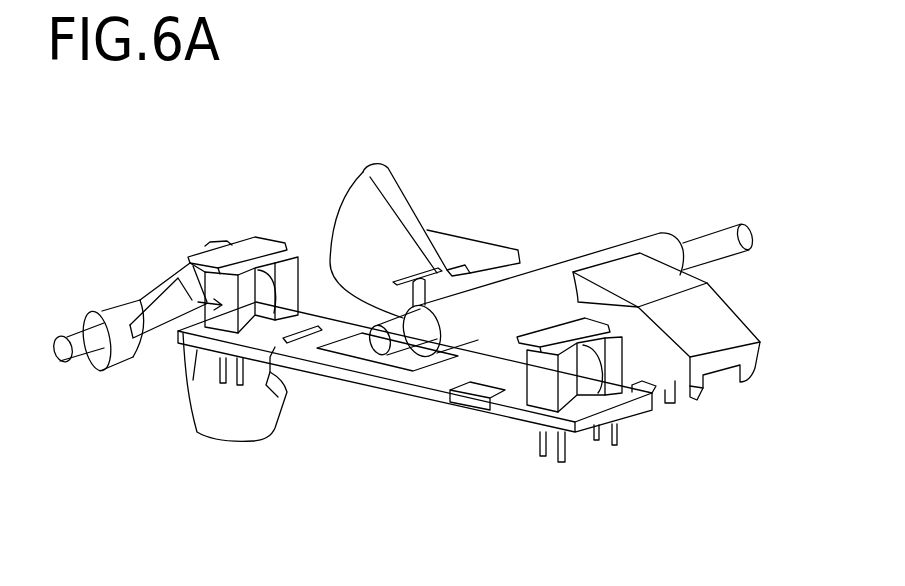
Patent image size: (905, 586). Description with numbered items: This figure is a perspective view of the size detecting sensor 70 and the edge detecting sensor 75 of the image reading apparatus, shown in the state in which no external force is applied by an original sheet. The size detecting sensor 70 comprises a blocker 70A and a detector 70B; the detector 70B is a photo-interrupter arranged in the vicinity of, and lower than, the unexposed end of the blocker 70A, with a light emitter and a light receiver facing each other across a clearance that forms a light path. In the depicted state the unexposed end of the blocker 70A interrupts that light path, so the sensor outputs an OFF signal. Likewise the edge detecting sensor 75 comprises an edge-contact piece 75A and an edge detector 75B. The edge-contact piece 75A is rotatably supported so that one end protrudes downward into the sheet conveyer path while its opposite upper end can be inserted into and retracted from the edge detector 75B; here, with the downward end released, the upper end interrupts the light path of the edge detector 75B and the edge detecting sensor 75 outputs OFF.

The size detecting sensor 70 is at (572, 483).
The blocker 70A is at (362, 210).
The detector 70B is at (538, 395).
The edge detecting sensor 75 is at (174, 321).
The edge-contact piece 75A is at (237, 243).
The edge detector 75B is at (196, 358).